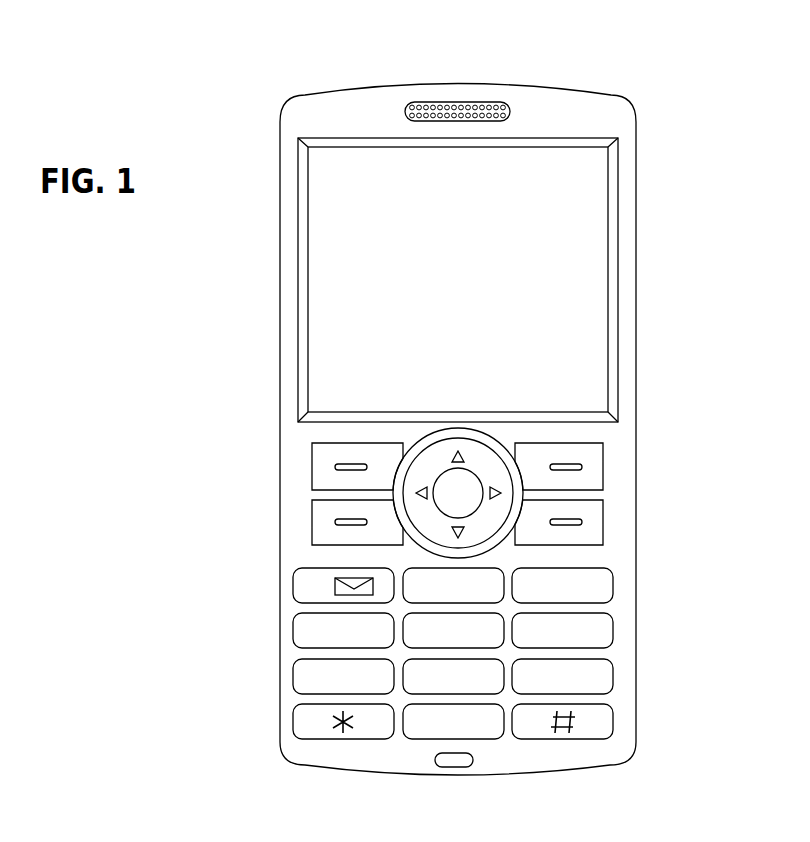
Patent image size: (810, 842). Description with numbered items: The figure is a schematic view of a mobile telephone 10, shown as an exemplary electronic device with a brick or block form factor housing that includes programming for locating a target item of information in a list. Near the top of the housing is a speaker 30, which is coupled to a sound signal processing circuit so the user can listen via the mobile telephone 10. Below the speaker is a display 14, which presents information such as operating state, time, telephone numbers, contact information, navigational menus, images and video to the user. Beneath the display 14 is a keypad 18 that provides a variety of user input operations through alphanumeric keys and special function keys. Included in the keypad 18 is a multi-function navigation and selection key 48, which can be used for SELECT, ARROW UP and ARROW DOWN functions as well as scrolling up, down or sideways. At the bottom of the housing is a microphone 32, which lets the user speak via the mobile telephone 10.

The mobile telephone 10 is at (290, 73).
The display 14 is at (325, 265).
The speaker 30 is at (457, 103).
The multi-function navigation and selection key 48 is at (493, 477).
The keypad 18 is at (366, 753).
The microphone 32 is at (460, 767).